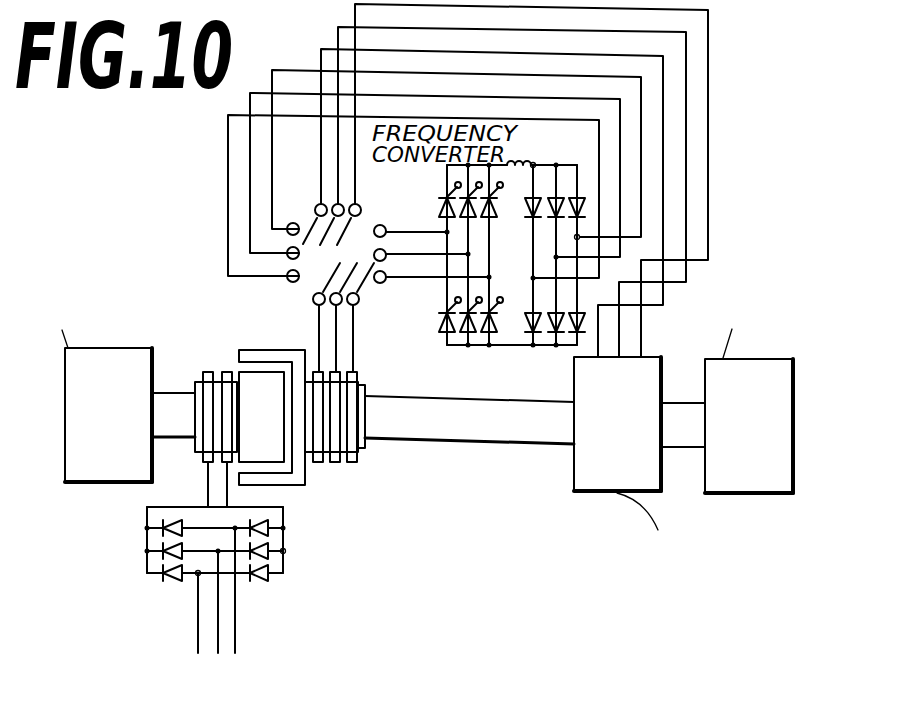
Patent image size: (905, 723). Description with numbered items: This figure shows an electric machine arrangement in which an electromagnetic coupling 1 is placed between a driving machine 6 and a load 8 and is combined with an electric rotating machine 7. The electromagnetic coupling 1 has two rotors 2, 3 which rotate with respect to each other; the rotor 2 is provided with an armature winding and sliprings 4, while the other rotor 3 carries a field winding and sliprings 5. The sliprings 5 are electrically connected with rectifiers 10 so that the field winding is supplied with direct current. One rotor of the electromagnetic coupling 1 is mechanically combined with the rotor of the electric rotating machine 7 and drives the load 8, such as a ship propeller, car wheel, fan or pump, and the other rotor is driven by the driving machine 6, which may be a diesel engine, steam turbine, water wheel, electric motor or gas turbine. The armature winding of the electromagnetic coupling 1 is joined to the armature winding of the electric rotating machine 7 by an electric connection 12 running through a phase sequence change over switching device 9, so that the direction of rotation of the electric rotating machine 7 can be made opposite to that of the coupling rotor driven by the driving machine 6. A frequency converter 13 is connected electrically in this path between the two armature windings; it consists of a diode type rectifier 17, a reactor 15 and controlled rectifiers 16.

The electromagnetic coupling 1 is at (371, 439).
The rotor 2 is at (247, 344).
The rotor 3 is at (198, 383).
The sliprings 4 is at (355, 375).
The sliprings 5 is at (202, 460).
The driving machine 6 is at (761, 385).
The electric rotating machine 7 is at (655, 484).
The load 8 is at (103, 394).
The phase sequence change over switching device 9 is at (348, 260).
The rectifiers 10 is at (235, 580).
The electric connection 12 is at (357, 323).
The frequency converter 13 is at (535, 148).
The reactor 15 is at (488, 197).
The controlled rectifiers 16 is at (492, 216).
The diode type rectifier 17 is at (579, 316).